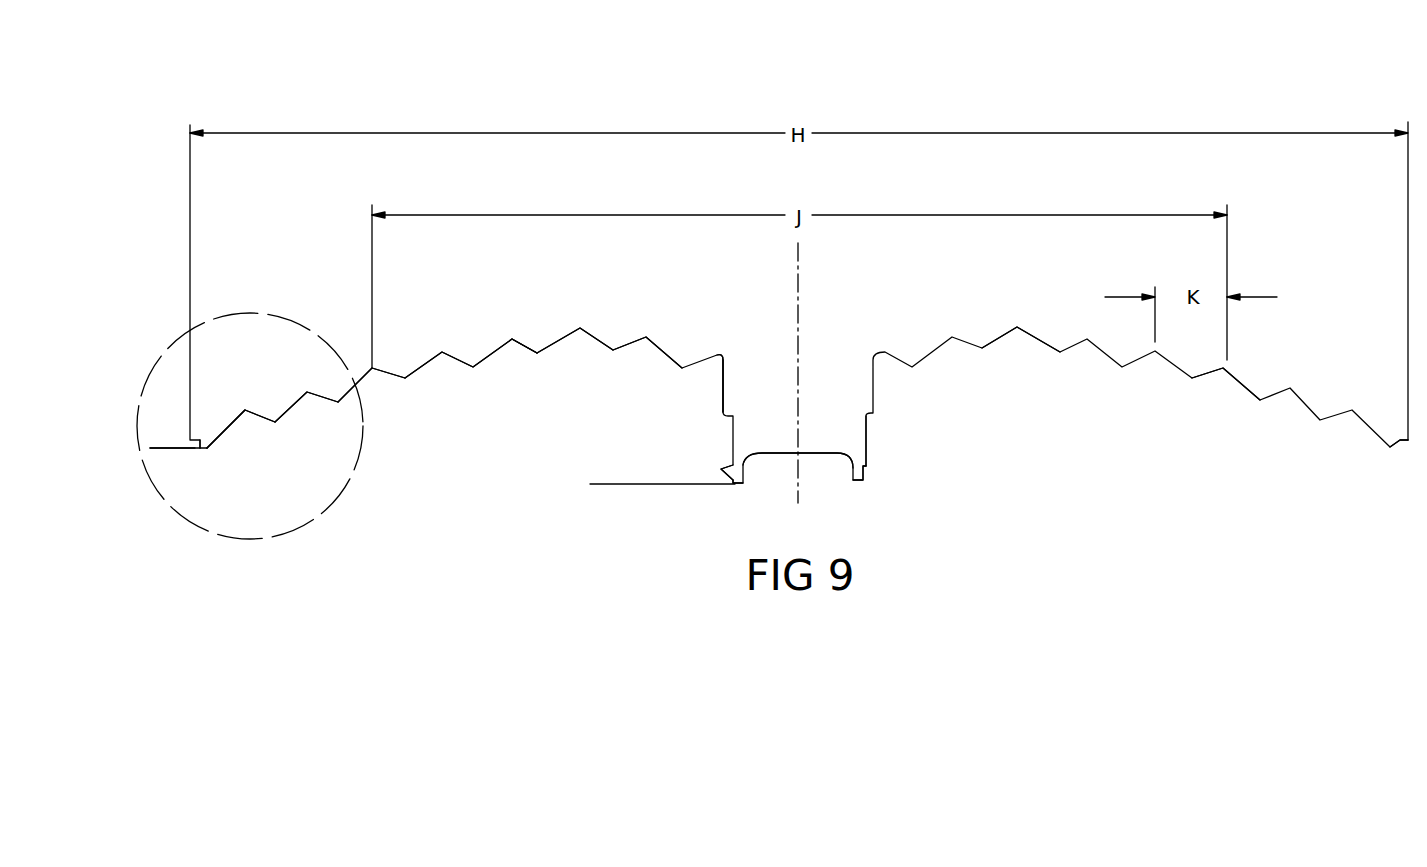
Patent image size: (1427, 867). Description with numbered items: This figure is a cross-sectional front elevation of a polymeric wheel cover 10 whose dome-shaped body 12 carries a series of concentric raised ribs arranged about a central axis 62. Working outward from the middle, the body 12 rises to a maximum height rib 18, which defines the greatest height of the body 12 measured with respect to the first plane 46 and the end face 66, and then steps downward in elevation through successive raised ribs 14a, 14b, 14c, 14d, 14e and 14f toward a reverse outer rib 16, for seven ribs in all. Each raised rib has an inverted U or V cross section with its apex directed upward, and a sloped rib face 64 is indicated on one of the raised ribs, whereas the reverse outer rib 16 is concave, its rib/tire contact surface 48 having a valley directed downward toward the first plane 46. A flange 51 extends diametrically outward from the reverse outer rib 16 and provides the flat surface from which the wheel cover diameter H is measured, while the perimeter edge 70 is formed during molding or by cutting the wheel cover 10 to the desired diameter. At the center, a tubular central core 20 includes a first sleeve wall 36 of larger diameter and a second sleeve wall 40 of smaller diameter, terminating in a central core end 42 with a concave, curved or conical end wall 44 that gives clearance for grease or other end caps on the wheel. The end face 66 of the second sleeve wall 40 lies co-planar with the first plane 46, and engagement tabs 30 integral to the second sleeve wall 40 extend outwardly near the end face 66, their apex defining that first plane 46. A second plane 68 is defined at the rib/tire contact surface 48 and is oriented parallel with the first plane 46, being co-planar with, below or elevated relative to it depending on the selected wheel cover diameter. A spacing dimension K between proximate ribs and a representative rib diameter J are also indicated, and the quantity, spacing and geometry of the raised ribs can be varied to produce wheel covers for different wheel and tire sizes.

The wheel cover 10 is at (1253, 90).
The body 12 is at (1208, 375).
The raised rib 14a is at (646, 337).
The raised rib 14b is at (580, 328).
The raised rib 14c is at (442, 352).
The raised rib 14d is at (372, 368).
The raised rib 14e is at (307, 392).
The raised rib 14f is at (245, 408).
The reverse outer rib 16 is at (207, 447).
The maximum height rib 18 is at (1017, 327).
The central core 20 is at (723, 358).
The tab 30 is at (868, 467).
The first sleeve wall 36 is at (722, 385).
The second sleeve wall 40 is at (866, 440).
The central core end 42 is at (733, 466).
The end wall 44 is at (810, 452).
The first plane 46 is at (612, 485).
The rib/tire contact surface 48 is at (208, 450).
The flange 51 is at (203, 442).
The central axis 62 is at (798, 286).
The sloped face 64 is at (520, 352).
The end face 66 is at (733, 485).
The second plane 68 is at (178, 449).
The perimeter edge 70 is at (1412, 447).